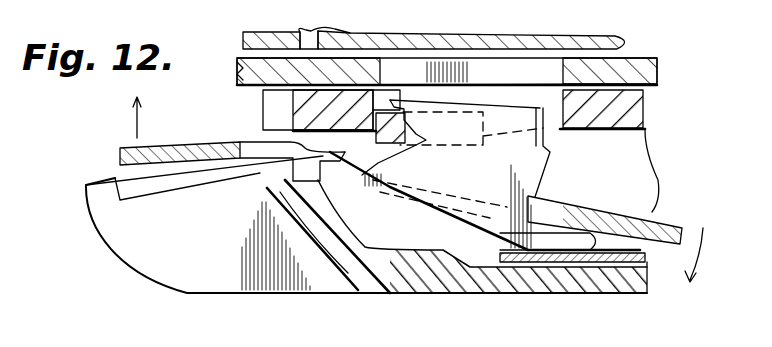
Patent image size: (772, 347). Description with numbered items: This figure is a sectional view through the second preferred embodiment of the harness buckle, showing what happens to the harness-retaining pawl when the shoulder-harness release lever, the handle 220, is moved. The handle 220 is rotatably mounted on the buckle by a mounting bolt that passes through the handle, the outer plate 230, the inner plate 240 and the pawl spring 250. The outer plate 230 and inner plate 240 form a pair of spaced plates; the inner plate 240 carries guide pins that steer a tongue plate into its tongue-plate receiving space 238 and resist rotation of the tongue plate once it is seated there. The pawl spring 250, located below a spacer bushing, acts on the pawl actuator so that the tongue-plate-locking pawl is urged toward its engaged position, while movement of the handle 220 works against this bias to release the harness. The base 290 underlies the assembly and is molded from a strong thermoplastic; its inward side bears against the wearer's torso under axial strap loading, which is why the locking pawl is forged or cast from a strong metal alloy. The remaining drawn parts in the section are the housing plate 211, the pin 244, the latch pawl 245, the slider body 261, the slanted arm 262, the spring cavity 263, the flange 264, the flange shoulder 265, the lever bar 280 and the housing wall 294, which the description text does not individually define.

The housing base plate 211 is at (348, 72).
The handle 220 is at (266, 31).
The outer plate 230 is at (487, 13).
The tongue-plate receiving space 238 is at (627, 50).
The inner plate 240 is at (318, 108).
The pin 244 is at (562, 100).
The latch pawl 245 is at (283, 183).
The pawl spring 250 is at (623, 263).
The slider body 261 is at (420, 150).
The slanted arm 262 is at (597, 234).
The spring cavity 263 is at (503, 96).
The flange 264 is at (548, 131).
The flange shoulder 265 is at (548, 152).
The lever bar 280 is at (120, 151).
The base 290 is at (468, 283).
The housing wall 294 is at (100, 232).